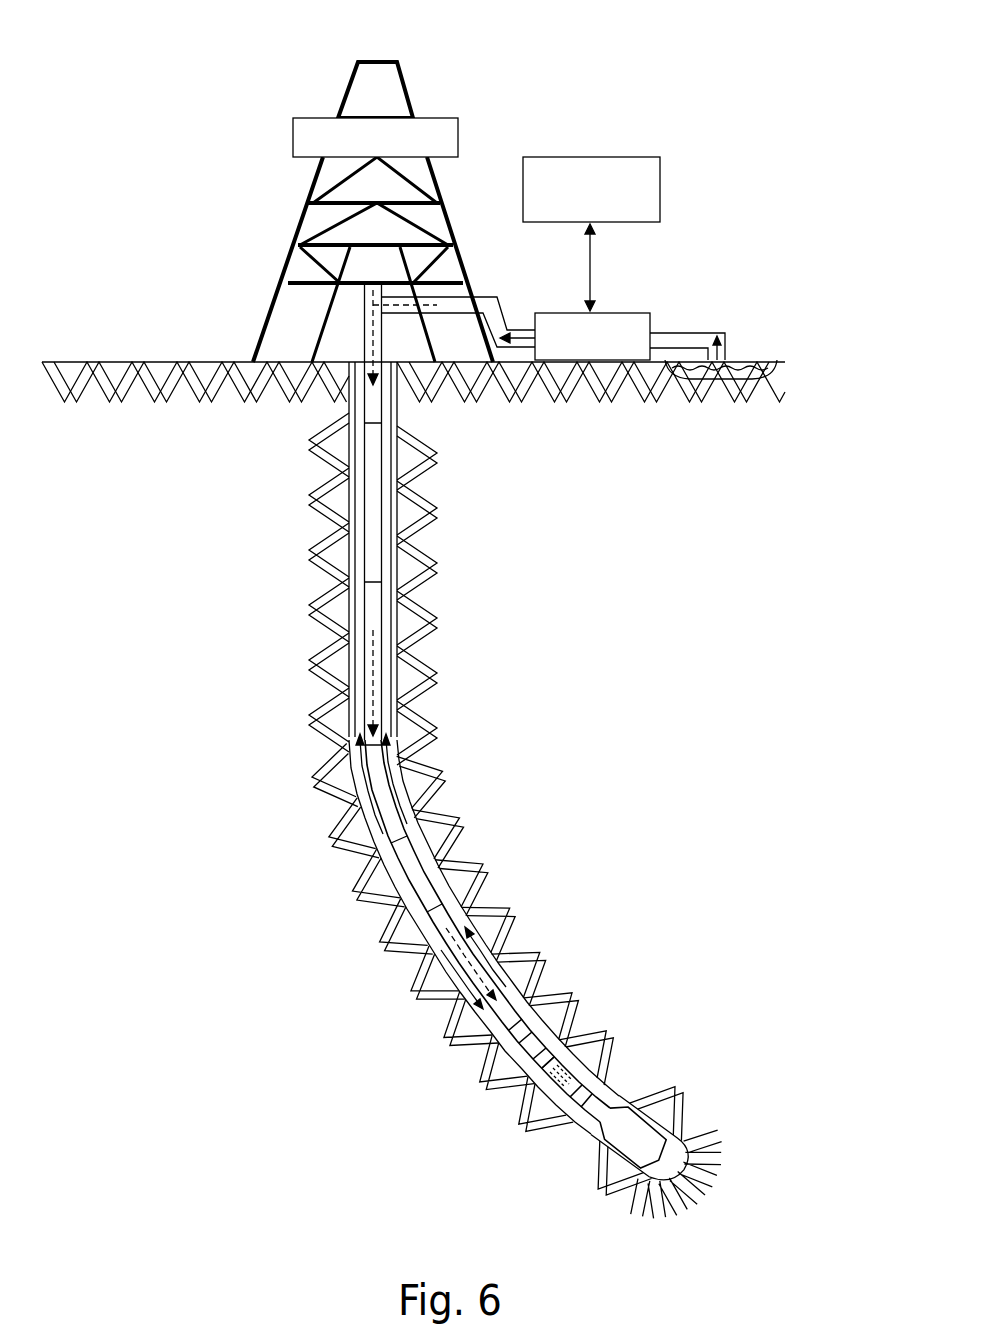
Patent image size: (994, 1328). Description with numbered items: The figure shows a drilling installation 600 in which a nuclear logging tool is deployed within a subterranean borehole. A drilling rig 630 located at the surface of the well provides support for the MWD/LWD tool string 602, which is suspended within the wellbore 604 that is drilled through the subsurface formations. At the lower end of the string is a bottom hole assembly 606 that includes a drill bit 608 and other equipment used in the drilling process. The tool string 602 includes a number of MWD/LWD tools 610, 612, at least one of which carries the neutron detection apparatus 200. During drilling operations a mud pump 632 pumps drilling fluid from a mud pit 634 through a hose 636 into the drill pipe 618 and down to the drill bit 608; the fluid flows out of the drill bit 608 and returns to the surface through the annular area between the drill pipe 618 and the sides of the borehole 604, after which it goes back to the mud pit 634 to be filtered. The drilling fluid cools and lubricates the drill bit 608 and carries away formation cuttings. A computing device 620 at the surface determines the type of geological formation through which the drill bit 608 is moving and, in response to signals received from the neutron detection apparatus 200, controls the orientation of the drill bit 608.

The drilling installation 600 is at (216, 55).
The drilling rig 630 is at (410, 97).
The computing device 620 is at (662, 183).
The mud pump 632 is at (617, 312).
The hose 636 is at (502, 318).
The mud pit 634 is at (752, 360).
The MWD/LWD tool 610 is at (387, 360).
The drill pipe 618 is at (382, 458).
The wellbore 604 is at (405, 595).
The MWD/LWD tool string 602 is at (410, 883).
The MWD/LWD tool 612 is at (592, 1045).
The neutron detection apparatus 200 is at (578, 1095).
The drill bit 608 is at (633, 1135).
The bottom hole assembly 606 is at (500, 1143).